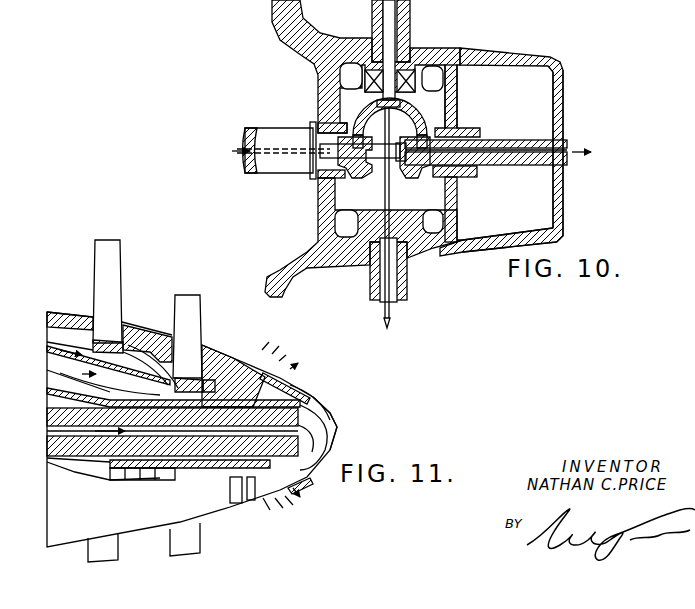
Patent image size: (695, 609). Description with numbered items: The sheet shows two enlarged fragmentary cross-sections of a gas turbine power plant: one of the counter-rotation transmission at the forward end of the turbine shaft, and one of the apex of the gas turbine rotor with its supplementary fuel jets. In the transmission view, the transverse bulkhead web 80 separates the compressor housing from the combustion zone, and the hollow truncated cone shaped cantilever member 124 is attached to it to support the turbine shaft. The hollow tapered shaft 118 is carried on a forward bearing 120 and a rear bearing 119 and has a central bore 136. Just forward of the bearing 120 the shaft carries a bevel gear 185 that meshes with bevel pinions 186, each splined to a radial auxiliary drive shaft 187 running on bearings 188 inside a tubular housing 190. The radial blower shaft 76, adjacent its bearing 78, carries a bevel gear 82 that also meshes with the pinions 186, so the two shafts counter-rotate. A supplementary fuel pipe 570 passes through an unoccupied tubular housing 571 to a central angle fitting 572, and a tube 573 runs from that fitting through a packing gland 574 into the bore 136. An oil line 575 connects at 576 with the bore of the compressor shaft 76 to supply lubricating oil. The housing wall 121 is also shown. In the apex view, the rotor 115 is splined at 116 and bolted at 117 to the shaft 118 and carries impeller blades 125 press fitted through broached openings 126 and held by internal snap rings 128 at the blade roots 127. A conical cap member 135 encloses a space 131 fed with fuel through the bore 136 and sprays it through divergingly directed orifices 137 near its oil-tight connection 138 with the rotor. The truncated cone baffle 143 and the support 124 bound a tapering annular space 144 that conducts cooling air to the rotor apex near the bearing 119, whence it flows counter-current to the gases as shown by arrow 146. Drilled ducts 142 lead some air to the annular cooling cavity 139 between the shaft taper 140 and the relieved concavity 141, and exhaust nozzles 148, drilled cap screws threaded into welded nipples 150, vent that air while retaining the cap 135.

In FIG. 10, the transverse bulkhead web 80 is at (322, 87).
In FIG. 10, the tubular housing 190 is at (408, 20).
In FIG. 10, the auxiliary drive shaft 187 is at (386, 27).
In FIG. 10, the bearing 188 is at (401, 62).
In FIG. 10, the bevel pinion 186 is at (410, 101).
In FIG. 10, the oil line 575 is at (326, 126).
In FIG. 10, the oil line connection 576 is at (318, 193).
In FIG. 10, the radial blower shaft 76 is at (286, 176).
In FIG. 10, the bearing 78 is at (318, 182).
In FIG. 10, the bevel gear 82 is at (364, 237).
In FIG. 10, the angle fitting 572 is at (360, 161).
In FIG. 10, the bevel gear 185 is at (420, 185).
In FIG. 10, the tube 573 is at (449, 176).
In FIG. 10, the packing gland 574 is at (452, 196).
In FIG. 10, the bore 136 is at (500, 152).
In FIG. 11, the bore 136 is at (47, 430).
In FIG. 10, the forward bearing 120 is at (482, 170).
In FIG. 10, the cantilever member 124 is at (500, 58).
In FIG. 11, the cantilever member 124 is at (173, 398).
In FIG. 10, the hollow tapered shaft 118 is at (515, 170).
In FIG. 11, the hollow tapered shaft 118 is at (47, 448).
In FIG. 10, the bottom wall 121 is at (488, 249).
In FIG. 10, the pipe 570 is at (405, 270).
In FIG. 10, the tubular housing 571 is at (402, 288).
In FIG. 11, the rotor 115 is at (58, 310).
In FIG. 11, the impeller blades 125 is at (122, 280).
In FIG. 11, the openings 126 is at (118, 342).
In FIG. 11, the arrow 146 is at (140, 340).
In FIG. 11, the spline 116 is at (188, 343).
In FIG. 11, the rotor blade roots 127 is at (80, 348).
In FIG. 11, the baffle 143 is at (50, 363).
In FIG. 11, the snap rings 128 is at (78, 371).
In FIG. 11, the annular-like space 144 is at (118, 389).
In FIG. 11, the rear bearing 119 is at (153, 480).
In FIG. 11, the taper 140 is at (223, 476).
In FIG. 11, the relieved concavity 141 is at (227, 490).
In FIG. 11, the oil-tight connection 138 is at (237, 367).
In FIG. 11, the drilled ducts 142 is at (210, 390).
In FIG. 11, the orifices 137 is at (263, 373).
In FIG. 11, the exhaust nozzles 148 is at (290, 380).
In FIG. 11, the nipples 150 is at (307, 400).
In FIG. 11, the bolted connection 117 is at (337, 423).
In FIG. 11, the conical cap member 135 is at (327, 433).
In FIG. 11, the space 131 is at (330, 450).
In FIG. 11, the annular cooling cavity 139 is at (293, 480).